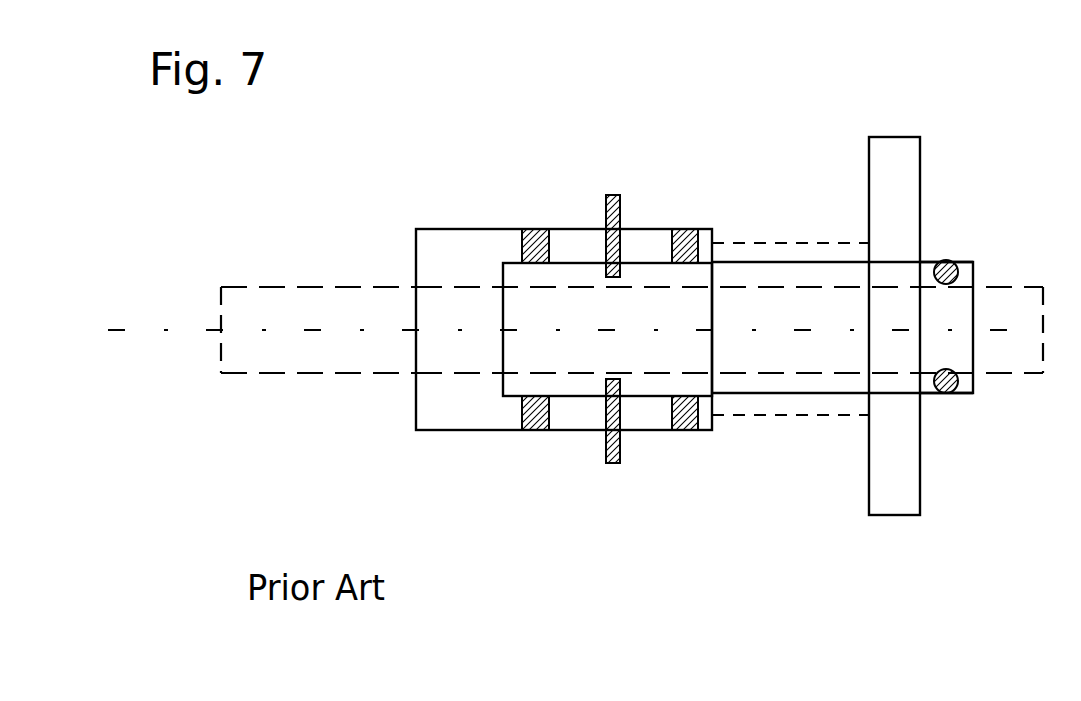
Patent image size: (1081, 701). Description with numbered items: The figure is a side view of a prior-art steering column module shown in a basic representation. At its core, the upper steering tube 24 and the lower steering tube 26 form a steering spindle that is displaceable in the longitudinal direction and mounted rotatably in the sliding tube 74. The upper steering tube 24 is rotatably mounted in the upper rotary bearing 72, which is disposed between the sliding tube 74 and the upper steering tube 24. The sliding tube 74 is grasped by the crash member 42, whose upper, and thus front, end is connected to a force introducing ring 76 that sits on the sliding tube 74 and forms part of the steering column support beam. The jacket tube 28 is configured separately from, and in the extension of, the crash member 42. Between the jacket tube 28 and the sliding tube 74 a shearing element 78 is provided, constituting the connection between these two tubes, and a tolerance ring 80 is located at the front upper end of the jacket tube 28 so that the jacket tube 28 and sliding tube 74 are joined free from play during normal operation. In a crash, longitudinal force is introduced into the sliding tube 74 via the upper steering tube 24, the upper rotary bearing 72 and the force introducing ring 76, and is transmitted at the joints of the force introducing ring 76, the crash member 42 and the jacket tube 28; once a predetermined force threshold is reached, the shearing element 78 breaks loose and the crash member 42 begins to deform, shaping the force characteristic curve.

The upper steering tube 24 is at (1022, 353).
The lower steering tube 26 is at (317, 373).
The jacket tube 28 is at (458, 229).
The crash member 42 is at (782, 416).
The upper rotary bearing 72 is at (946, 263).
The sliding tube 74 is at (782, 262).
The force introducing ring 76 is at (920, 429).
The shearing element 78 is at (620, 213).
The tolerance ring 80 is at (690, 413).